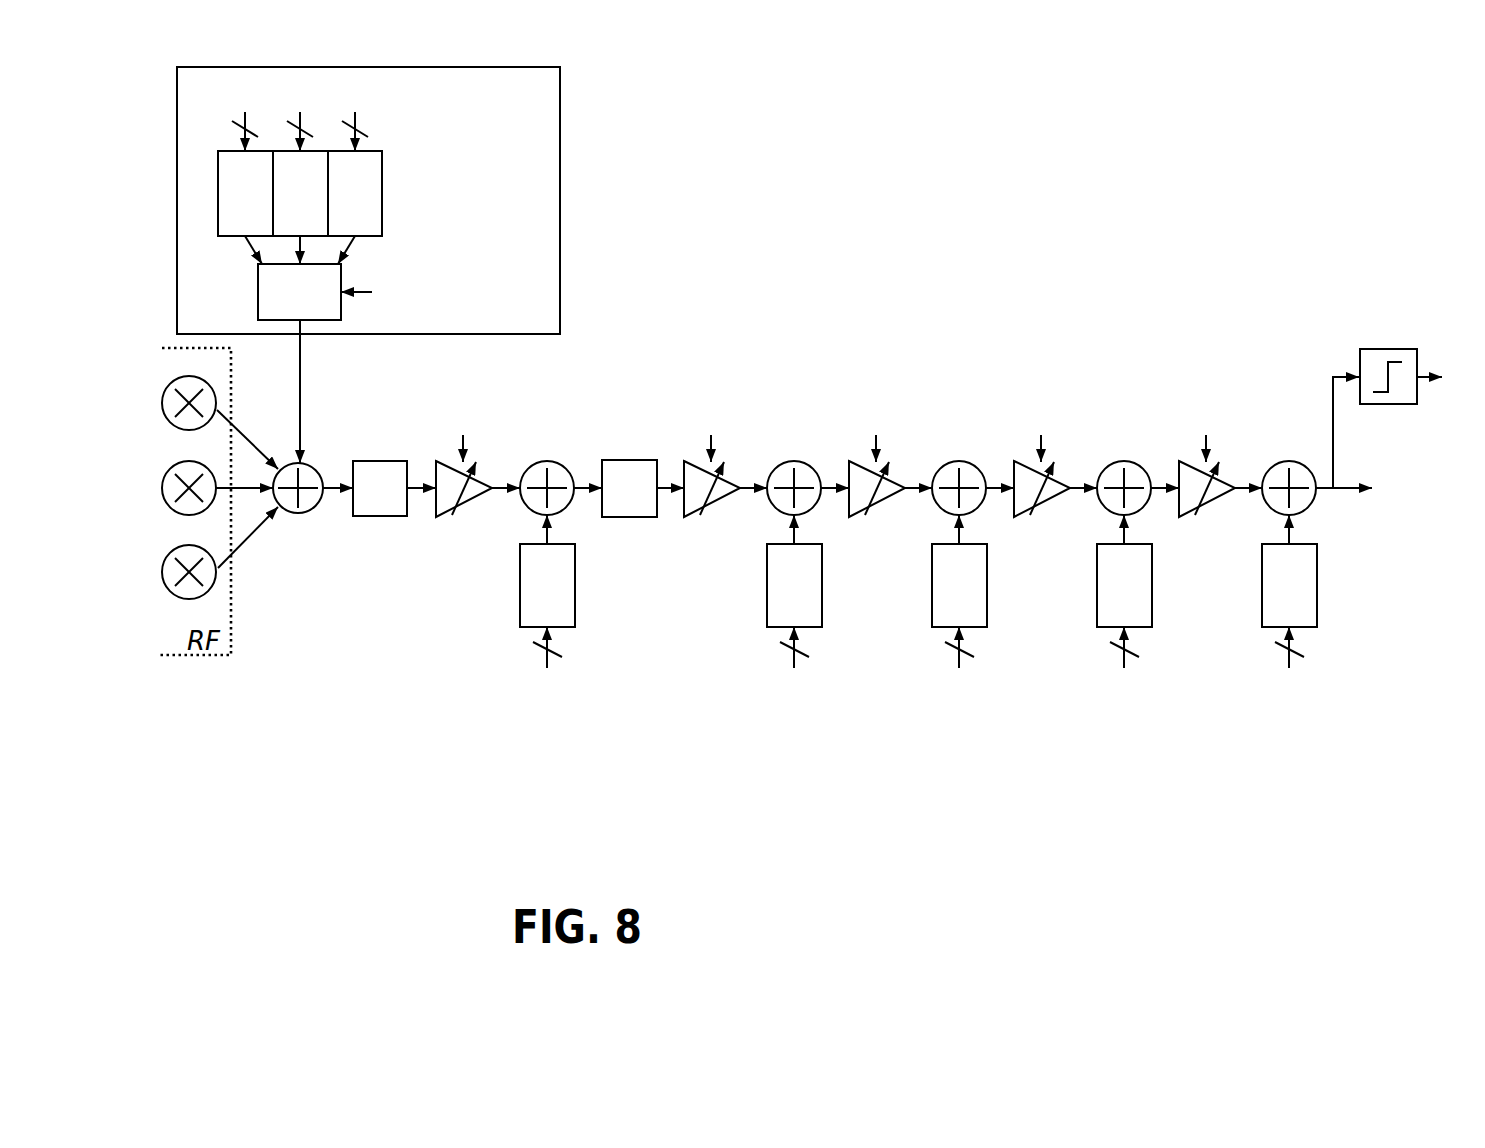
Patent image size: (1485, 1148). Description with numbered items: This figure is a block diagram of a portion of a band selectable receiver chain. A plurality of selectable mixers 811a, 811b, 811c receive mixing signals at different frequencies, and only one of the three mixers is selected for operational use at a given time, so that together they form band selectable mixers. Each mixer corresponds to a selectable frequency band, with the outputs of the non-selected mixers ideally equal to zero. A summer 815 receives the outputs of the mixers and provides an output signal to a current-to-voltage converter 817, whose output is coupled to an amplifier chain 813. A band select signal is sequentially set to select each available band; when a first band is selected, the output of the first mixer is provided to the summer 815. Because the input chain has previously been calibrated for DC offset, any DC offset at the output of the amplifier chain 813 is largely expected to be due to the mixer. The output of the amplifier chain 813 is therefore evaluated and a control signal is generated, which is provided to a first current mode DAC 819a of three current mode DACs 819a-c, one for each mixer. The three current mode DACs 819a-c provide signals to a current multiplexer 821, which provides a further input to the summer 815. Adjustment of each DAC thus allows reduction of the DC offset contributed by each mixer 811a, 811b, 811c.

The selectable mixer 811a is at (164, 405).
The selectable mixer 811b is at (163, 490).
The selectable mixer 811c is at (163, 575).
The amplifier chain 813 is at (858, 332).
The summer 815 is at (301, 514).
The current-to-voltage converter 817 is at (377, 517).
The first current mode DAC 819a is at (218, 183).
The current mode DACs 819a-c is at (368, 200).
The current multiplexer 821 is at (342, 270).